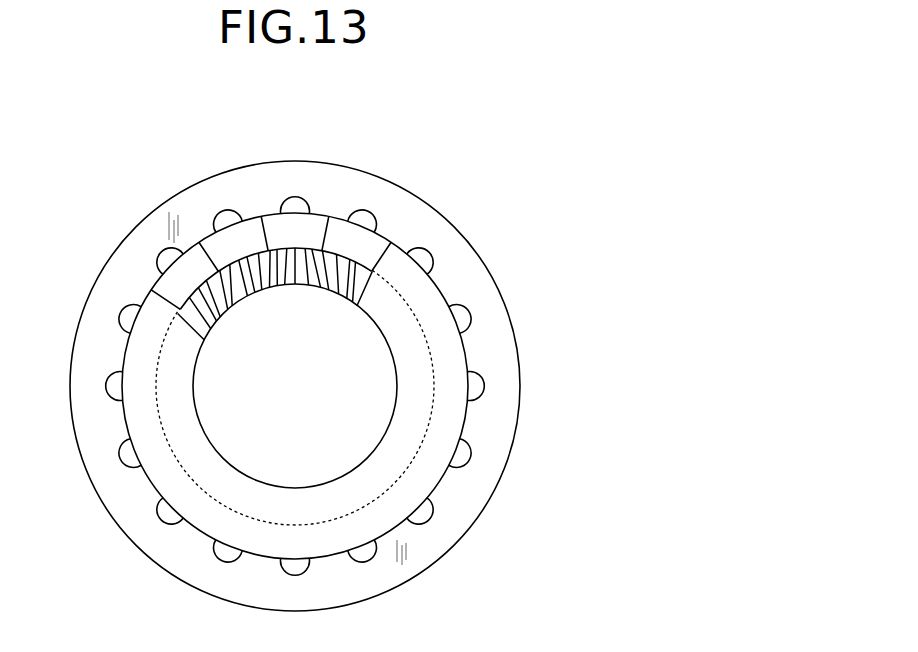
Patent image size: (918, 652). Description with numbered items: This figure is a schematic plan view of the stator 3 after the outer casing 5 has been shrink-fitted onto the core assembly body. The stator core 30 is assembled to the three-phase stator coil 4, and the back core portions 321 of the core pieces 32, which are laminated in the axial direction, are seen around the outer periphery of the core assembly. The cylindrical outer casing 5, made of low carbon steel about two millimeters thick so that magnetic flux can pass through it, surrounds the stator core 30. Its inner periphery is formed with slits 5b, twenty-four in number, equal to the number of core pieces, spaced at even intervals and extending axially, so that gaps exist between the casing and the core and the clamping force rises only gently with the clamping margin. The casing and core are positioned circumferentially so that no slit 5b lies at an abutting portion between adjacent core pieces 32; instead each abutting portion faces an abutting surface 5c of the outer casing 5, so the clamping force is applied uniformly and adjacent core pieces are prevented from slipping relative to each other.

The stator 3 is at (113, 191).
The outer casing 5 is at (99, 336).
The slits 5b is at (221, 212).
The abutting surface 5c is at (258, 208).
The stator core 30 is at (458, 421).
The core pieces 32 is at (248, 230).
The back core portions 321 is at (323, 214).
The stator coil 4 is at (363, 285).